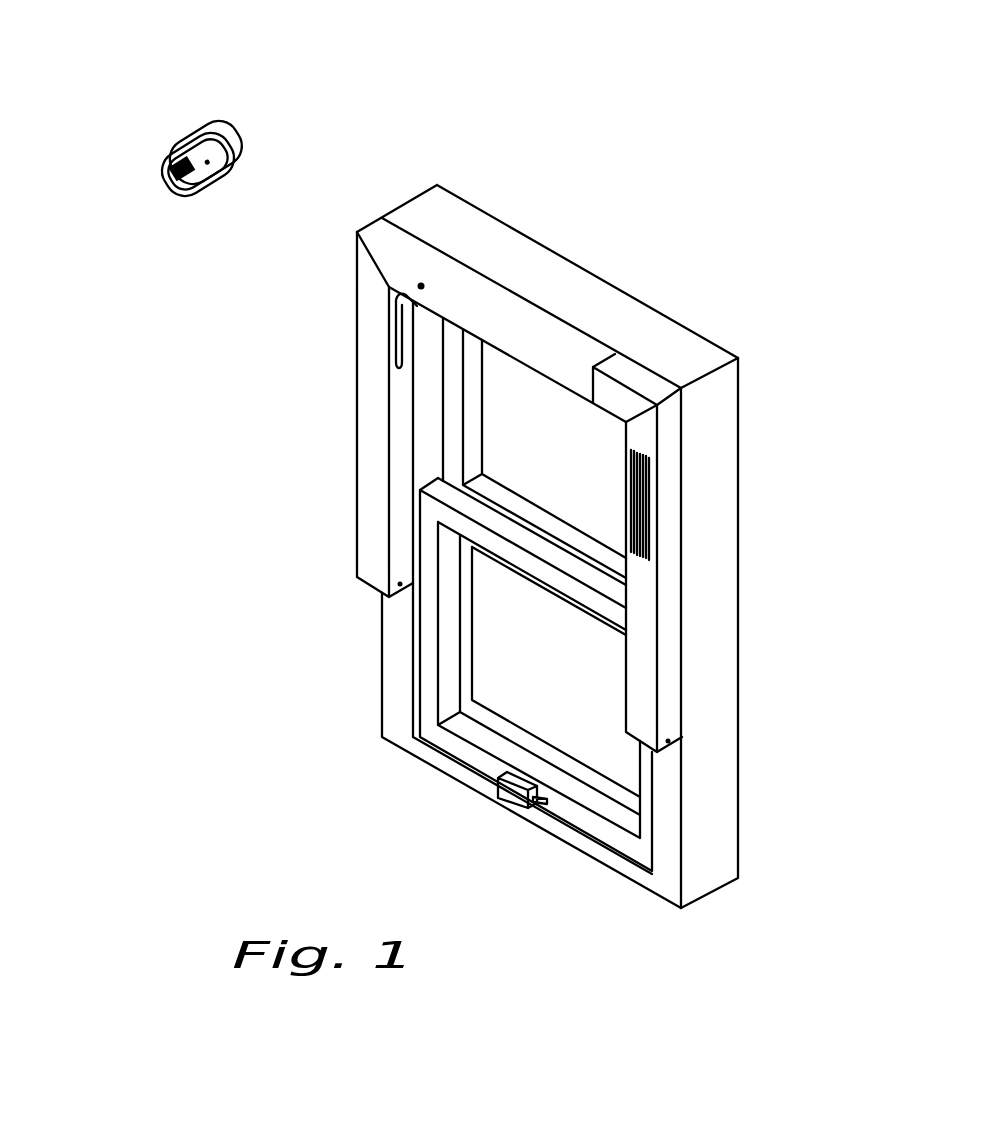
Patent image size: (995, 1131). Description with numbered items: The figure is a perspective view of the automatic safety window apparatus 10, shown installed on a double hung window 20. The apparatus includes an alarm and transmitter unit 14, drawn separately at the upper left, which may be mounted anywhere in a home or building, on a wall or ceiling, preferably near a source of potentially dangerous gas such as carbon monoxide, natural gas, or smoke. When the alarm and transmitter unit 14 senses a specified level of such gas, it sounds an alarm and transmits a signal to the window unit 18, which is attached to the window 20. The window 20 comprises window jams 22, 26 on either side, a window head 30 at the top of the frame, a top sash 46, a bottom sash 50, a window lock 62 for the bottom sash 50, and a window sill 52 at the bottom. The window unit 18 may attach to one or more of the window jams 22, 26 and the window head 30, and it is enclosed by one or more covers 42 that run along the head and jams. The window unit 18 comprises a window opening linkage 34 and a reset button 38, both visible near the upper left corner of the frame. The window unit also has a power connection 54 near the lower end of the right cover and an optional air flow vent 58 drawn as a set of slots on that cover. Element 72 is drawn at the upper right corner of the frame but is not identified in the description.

The window assembly 10 is at (250, 630).
The wireless sensor device 14 is at (241, 127).
The window frame assembly 18 is at (447, 297).
The frame 20 is at (600, 275).
The side jamb member 22 is at (420, 403).
The frame side 26 is at (705, 553).
The head member 30 is at (530, 252).
The hook 34 is at (394, 304).
The pin 38 is at (415, 286).
The trim member 42 is at (586, 331).
The upper sash 46 is at (565, 483).
The lower sash 50 is at (518, 661).
The sill 52 is at (630, 870).
The fastener 54 is at (660, 755).
The vent slots 58 is at (650, 561).
The sash lock 62 is at (528, 803).
The corner piece 72 is at (630, 347).